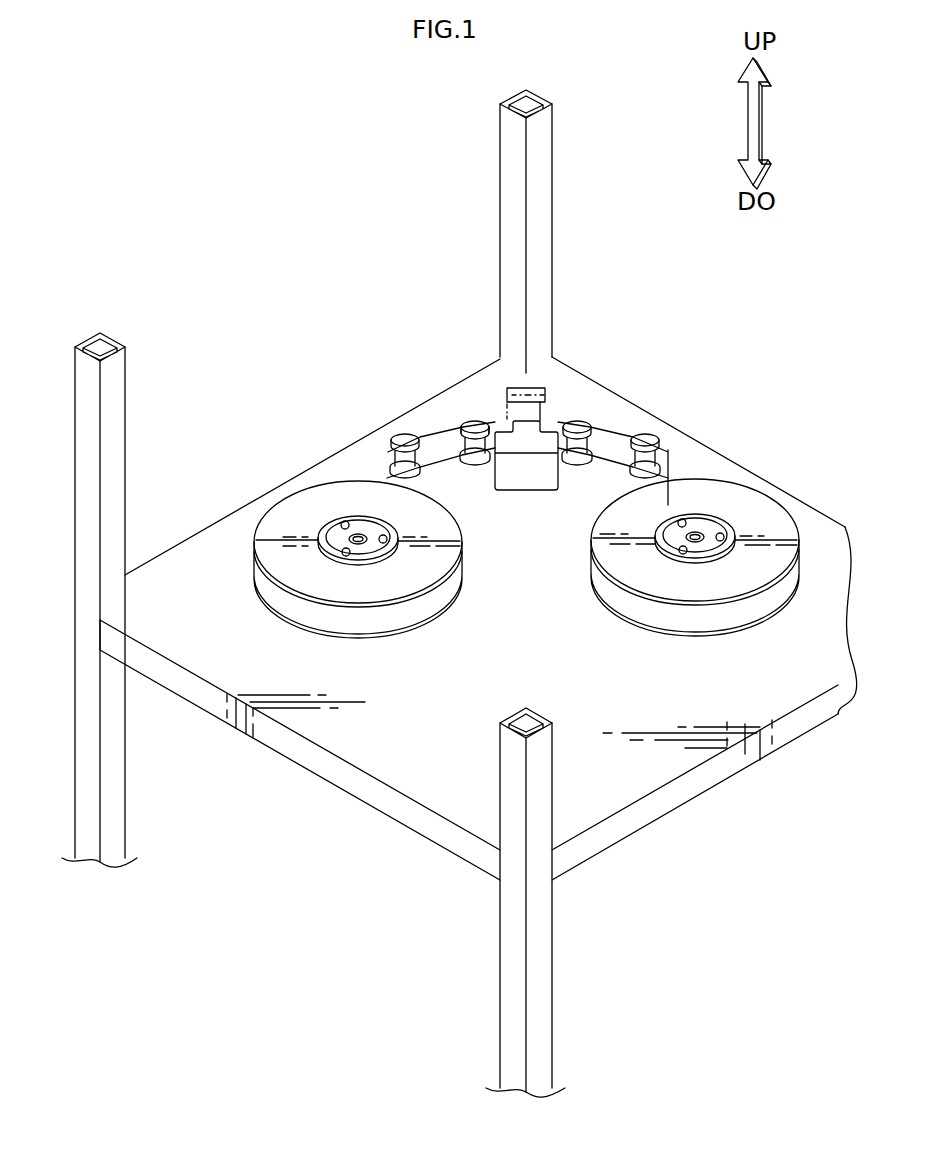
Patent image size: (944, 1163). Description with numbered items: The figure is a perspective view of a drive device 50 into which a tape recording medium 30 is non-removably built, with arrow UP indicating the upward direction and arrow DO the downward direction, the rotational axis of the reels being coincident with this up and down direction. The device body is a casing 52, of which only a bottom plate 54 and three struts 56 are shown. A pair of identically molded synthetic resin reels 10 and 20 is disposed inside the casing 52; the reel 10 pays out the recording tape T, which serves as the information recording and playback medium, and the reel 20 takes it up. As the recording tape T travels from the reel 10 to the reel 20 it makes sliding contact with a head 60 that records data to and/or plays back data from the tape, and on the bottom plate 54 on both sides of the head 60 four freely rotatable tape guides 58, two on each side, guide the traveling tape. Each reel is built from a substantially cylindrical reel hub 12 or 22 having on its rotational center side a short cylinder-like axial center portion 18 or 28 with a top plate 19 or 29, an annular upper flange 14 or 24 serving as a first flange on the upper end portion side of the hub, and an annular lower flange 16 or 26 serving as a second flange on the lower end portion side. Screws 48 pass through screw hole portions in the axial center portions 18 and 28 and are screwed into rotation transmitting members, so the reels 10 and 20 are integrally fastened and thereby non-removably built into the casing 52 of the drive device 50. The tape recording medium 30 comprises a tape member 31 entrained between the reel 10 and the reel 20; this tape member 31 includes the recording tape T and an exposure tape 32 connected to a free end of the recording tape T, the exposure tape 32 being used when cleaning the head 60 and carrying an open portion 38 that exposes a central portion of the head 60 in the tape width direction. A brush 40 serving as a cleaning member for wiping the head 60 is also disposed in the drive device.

The reel 10 is at (703, 530).
The reel hub 12 is at (714, 520).
The upper flange 14 is at (770, 520).
The lower flange 16 is at (782, 605).
The axial center portion 18 is at (703, 550).
The top plate 19 is at (662, 548).
The reel 20 is at (365, 541).
The reel hub 22 is at (334, 525).
The upper flange 24 is at (290, 506).
The lower flange 26 is at (272, 608).
The axial center portion 28 is at (368, 548).
The top plate 29 is at (385, 541).
The tape recording medium 30 is at (532, 402).
The tape member 31 is at (607, 463).
The exposure tape 32 is at (432, 455).
The open portion 38 is at (475, 425).
The brush 40 is at (524, 388).
The screws 48 is at (346, 520).
The drive device 50 is at (478, 582).
The casing 52 is at (290, 765).
The bottom plate 54 is at (376, 755).
The struts 56 is at (540, 183).
The tape guides 58 is at (405, 438).
The head 60 is at (527, 437).
The recording tape T is at (668, 505).